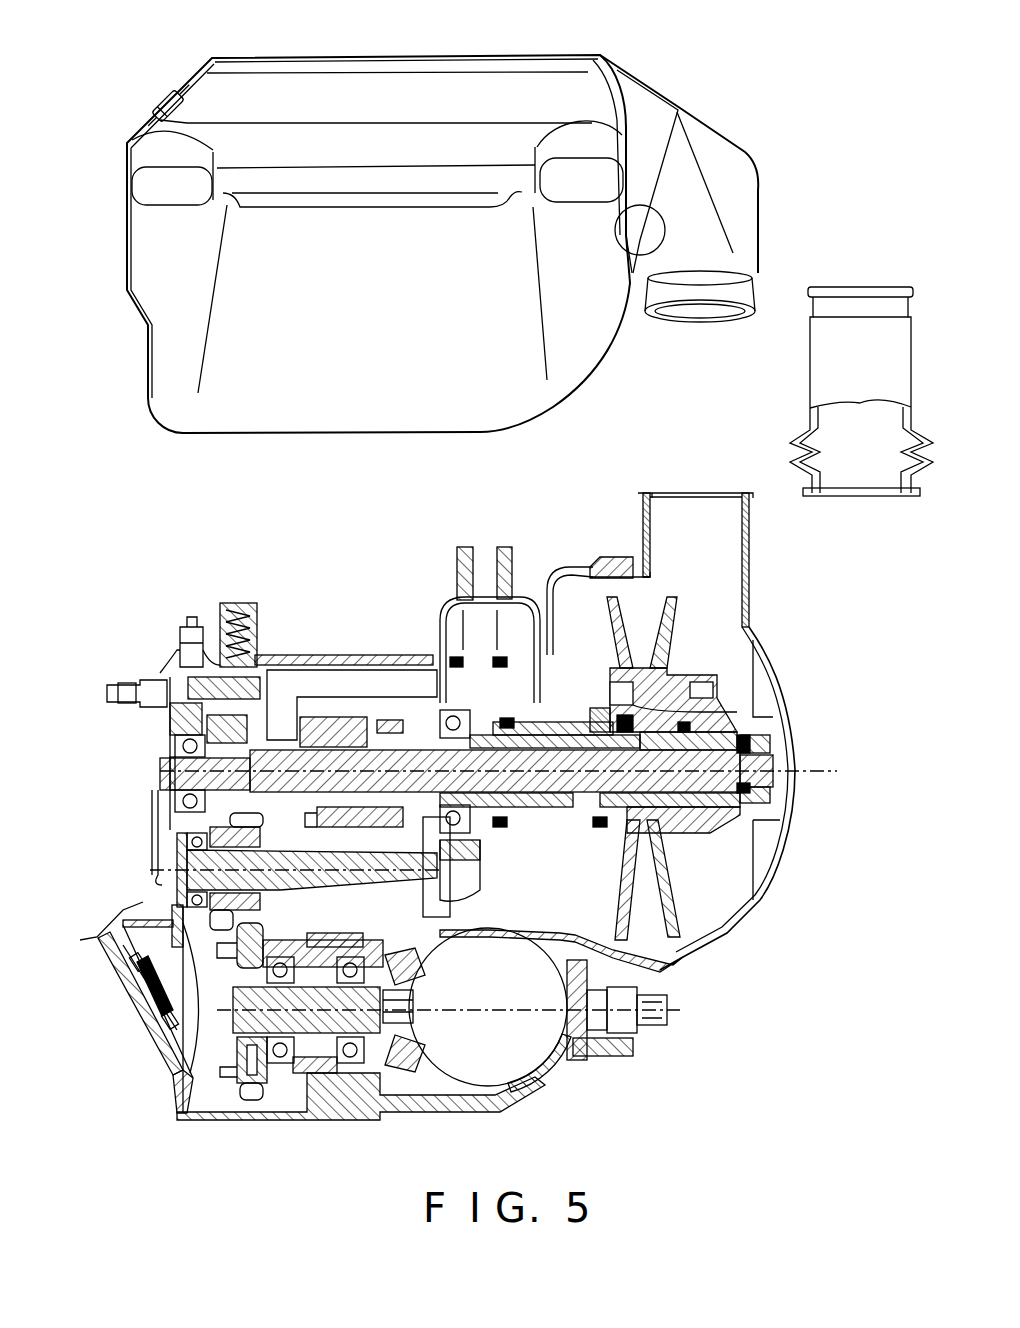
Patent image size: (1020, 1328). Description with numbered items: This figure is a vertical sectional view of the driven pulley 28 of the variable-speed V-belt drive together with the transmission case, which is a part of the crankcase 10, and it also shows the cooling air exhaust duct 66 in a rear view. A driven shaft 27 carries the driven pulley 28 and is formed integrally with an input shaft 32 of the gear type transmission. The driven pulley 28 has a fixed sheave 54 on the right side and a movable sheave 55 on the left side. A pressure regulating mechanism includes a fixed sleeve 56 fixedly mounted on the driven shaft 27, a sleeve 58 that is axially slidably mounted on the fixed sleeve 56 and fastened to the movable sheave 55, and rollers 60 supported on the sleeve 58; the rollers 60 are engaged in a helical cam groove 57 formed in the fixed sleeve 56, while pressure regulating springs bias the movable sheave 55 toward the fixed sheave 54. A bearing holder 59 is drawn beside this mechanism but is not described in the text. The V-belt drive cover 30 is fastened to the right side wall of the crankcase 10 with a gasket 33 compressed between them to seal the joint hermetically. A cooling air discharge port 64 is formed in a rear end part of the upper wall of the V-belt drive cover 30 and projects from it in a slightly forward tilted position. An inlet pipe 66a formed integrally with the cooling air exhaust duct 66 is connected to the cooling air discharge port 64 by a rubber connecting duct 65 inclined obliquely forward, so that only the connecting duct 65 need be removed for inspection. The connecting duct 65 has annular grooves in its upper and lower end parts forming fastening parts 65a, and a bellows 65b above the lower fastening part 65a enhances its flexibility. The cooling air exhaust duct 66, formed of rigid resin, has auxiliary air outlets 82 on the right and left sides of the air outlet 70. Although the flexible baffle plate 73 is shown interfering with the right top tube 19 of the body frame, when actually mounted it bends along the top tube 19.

The crankcase 10 is at (345, 1120).
The top tube 19 is at (612, 232).
The driven shaft 27 is at (533, 757).
The driven pulley 28 is at (688, 612).
The V-belt drive cover 30 is at (776, 666).
The input shaft 32 is at (167, 766).
The gasket 33 is at (623, 557).
The fixed sheave 54 is at (683, 930).
The movable sheave 55 is at (617, 912).
The fixed sleeve 56 is at (722, 803).
The helical cam groove 57 is at (583, 807).
The sleeve 58 is at (670, 835).
The bearing holder 59 is at (523, 833).
The rollers 60 is at (627, 808).
The cooling air discharge port 64 is at (751, 543).
The connecting duct 65 is at (830, 360).
The fastening parts 65a is at (858, 300).
The bellows 65b is at (793, 437).
The cooling air exhaust duct 66 is at (393, 67).
The inlet pipe 66a is at (740, 193).
The air outlet 70 is at (447, 202).
The baffle plate 73 is at (392, 336).
The auxiliary air outlets 82 is at (163, 180).